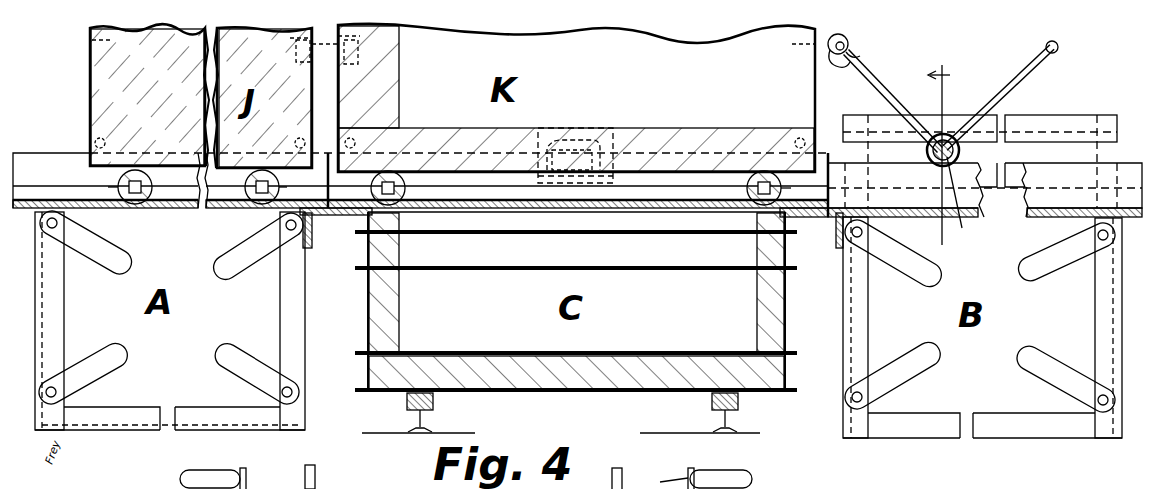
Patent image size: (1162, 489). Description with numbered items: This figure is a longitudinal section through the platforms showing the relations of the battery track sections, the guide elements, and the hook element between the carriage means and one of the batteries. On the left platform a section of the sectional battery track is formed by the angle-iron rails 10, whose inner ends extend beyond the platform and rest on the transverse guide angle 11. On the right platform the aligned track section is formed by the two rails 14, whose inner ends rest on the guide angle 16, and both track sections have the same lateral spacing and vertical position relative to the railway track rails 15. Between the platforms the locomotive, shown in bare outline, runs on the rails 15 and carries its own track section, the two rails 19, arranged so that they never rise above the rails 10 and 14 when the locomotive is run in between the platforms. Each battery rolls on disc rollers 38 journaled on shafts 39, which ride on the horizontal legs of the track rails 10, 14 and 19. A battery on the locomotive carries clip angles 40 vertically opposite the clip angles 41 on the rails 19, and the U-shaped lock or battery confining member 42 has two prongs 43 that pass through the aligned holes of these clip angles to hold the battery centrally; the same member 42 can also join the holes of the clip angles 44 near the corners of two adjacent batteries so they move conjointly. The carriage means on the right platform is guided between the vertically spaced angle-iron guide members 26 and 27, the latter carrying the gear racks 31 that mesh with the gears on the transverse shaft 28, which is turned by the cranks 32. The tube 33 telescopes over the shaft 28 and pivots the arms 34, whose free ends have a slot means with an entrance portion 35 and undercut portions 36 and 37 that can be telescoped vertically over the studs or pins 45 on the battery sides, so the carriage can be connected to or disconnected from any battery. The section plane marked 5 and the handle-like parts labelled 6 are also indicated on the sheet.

The section line 5- 5 is at (940, 143).
The handle 6 is at (668, 471).
The rails 10 is at (420, 185).
The guide angle 11 is at (312, 238).
The rails 14 is at (1033, 200).
The railway track rails 15 is at (424, 420).
The guide angle 16 is at (842, 240).
The rails 19 is at (480, 189).
The guide member 26 is at (1058, 125).
The guide member 27 is at (1015, 188).
The shaft 28 is at (970, 204).
The gear racks 31 is at (315, 480).
The cranks 32 is at (1015, 78).
The tube 33 is at (947, 135).
The arms 34 is at (895, 100).
The entrance portion 35 is at (836, 68).
The undercut portion 36 is at (848, 42).
The undercut portion 37 is at (862, 58).
The disc rollers 38 is at (245, 187).
The shafts 39 is at (451, 188).
The clip angles 40 is at (613, 130).
The clip angles 41 is at (613, 183).
The lock or battery confining member 42 is at (358, 44).
The prongs 43 is at (296, 60).
The clip angles 44 is at (112, 42).
The studs or pins 45 is at (105, 140).